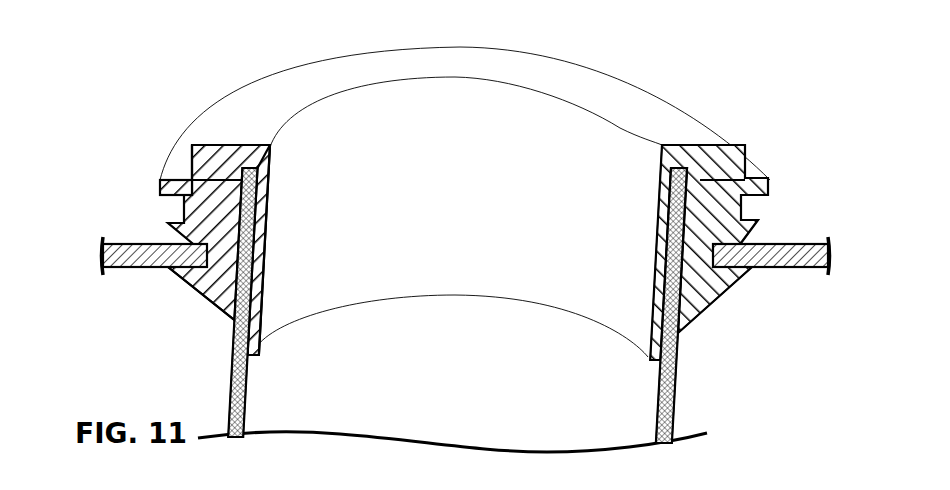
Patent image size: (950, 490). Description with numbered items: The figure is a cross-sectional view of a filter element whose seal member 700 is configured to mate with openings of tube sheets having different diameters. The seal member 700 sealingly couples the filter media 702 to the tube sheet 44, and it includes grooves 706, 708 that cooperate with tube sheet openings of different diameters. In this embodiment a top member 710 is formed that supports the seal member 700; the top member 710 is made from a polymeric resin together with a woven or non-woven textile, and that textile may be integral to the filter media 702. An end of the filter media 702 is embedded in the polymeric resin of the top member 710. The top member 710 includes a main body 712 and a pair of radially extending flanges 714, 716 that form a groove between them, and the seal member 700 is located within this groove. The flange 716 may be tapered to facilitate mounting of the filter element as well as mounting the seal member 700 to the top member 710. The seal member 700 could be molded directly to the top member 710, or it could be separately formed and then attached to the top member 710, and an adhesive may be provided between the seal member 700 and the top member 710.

The tube sheet 44 is at (125, 270).
The seal member 700 is at (165, 180).
The filter media 702 is at (678, 392).
The groove 706 is at (135, 204).
The groove 708 is at (264, 260).
The top member 710 is at (683, 117).
The main body 712 is at (229, 178).
The flange 714 is at (245, 166).
The flange 716 is at (228, 318).